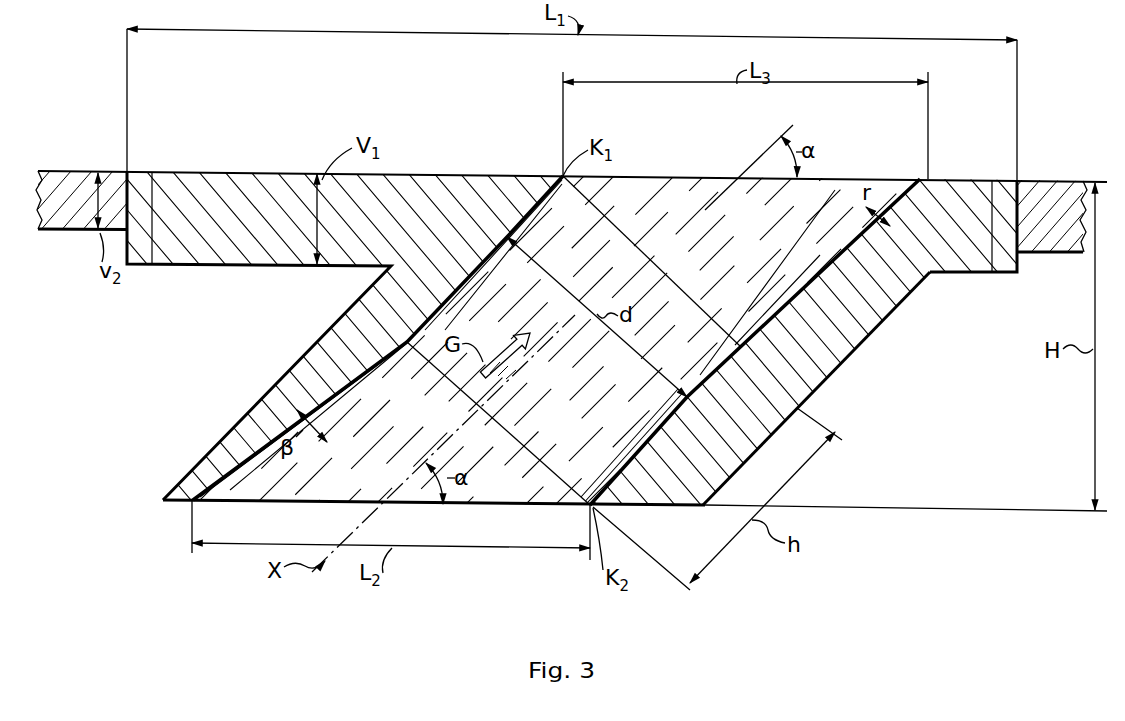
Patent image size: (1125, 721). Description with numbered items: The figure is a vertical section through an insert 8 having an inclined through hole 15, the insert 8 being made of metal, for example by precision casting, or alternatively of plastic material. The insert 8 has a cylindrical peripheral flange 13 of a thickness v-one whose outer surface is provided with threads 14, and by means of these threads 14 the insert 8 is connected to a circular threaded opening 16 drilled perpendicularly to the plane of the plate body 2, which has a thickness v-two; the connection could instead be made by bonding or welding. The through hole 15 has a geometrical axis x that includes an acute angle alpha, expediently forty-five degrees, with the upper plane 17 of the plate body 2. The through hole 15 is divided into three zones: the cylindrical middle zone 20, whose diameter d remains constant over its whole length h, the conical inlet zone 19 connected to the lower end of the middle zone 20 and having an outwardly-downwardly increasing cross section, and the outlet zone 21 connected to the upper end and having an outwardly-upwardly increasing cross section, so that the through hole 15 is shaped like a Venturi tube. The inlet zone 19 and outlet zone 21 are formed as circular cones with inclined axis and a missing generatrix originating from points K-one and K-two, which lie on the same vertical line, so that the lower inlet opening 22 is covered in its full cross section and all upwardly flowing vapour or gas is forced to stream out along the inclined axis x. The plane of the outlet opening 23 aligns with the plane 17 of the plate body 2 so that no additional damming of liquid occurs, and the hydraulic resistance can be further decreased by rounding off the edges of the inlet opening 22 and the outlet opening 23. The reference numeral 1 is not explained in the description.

The welded joint 1 is at (82, 164).
The plate body 2 is at (61, 215).
The insert 8 is at (840, 337).
The cylindrical peripheral flange 13 is at (200, 195).
The threads 14 is at (138, 193).
The through hole 15 is at (830, 260).
The circular threaded opening 16 is at (147, 267).
The upper plane of the plate body 17 is at (44, 187).
The conical inlet zone 19 is at (412, 425).
The cylindrical middle zone 20 is at (517, 302).
The outlet zone 21 is at (746, 275).
The lower inlet opening 22 is at (407, 503).
The outlet opening 23 is at (628, 177).